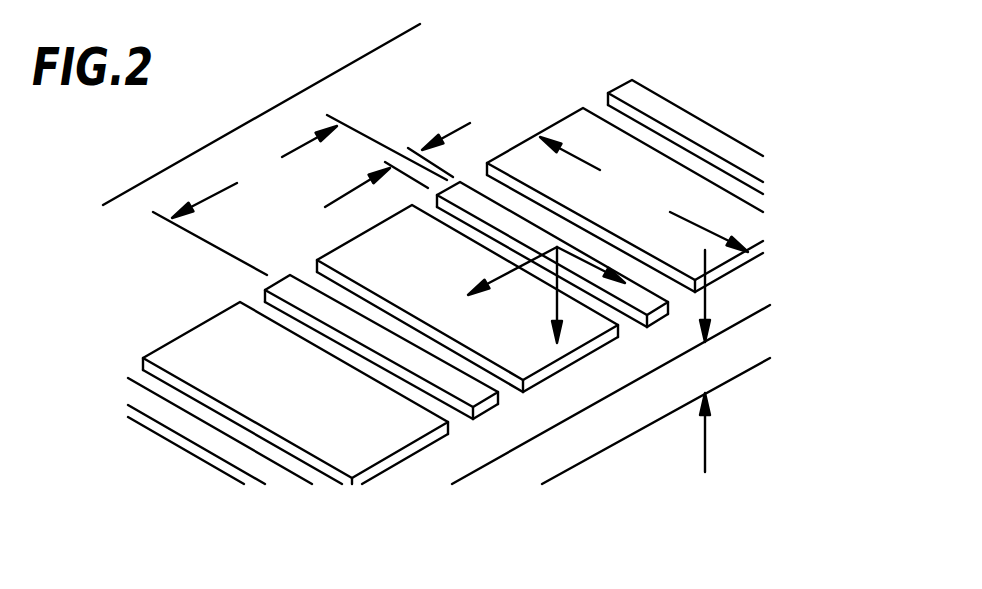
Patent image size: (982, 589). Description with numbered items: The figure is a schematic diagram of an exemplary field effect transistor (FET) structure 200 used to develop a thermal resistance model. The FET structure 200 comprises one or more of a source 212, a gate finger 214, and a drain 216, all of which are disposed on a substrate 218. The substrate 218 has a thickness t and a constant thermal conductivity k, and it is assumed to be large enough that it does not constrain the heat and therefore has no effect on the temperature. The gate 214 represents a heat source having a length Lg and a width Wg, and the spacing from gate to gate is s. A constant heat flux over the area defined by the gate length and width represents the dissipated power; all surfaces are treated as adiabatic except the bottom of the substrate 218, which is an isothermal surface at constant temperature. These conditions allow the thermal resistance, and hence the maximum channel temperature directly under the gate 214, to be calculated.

The field effect transistor (FET) structure 200 is at (722, 56).
The source 212 is at (738, 222).
The gate (finger) 214 is at (645, 298).
The drain 216 is at (530, 360).
The substrate 218 is at (470, 520).